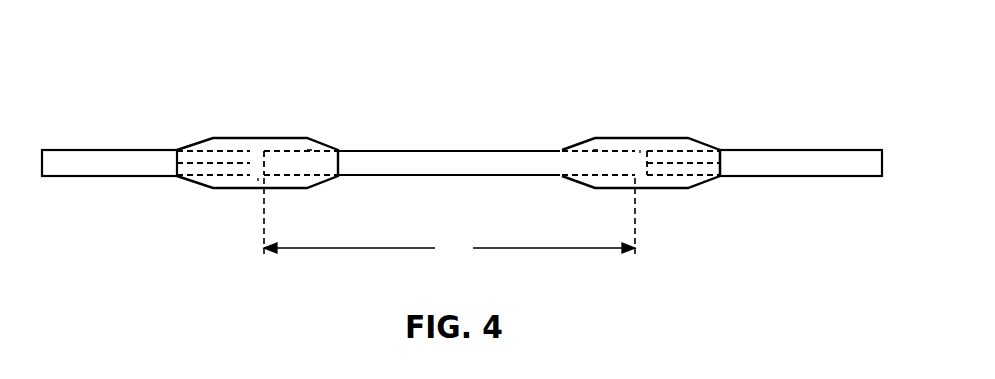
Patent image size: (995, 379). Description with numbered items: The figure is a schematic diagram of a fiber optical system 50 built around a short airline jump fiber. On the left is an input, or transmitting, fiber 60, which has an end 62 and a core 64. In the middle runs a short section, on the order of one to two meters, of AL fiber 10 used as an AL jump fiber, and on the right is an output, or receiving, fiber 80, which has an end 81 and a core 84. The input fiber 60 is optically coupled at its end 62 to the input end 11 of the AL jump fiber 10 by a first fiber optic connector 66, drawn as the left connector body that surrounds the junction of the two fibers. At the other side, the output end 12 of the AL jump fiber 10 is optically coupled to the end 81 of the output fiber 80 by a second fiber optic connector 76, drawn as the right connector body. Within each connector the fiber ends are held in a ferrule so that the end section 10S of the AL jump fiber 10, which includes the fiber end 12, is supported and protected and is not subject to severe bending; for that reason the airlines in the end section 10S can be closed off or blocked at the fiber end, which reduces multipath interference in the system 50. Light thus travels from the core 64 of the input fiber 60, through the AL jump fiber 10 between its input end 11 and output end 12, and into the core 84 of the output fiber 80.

The fiber optical system 50 is at (146, 67).
The input fiber 60 is at (145, 150).
The AL jump fiber 10 is at (450, 150).
The output fiber 80 is at (795, 150).
The end of input fiber 62 is at (253, 154).
The core of input fiber 64 is at (225, 164).
The first fiber optic connector 66 is at (263, 138).
The input end of AL jump fiber 11 is at (258, 177).
The end section of AL jump fiber 10S is at (355, 88).
The end of output fiber 81 is at (643, 176).
The second fiber optic connector 76 is at (658, 137).
The core of output fiber 84 is at (675, 163).
The output end of AL jump fiber 12 is at (636, 156).